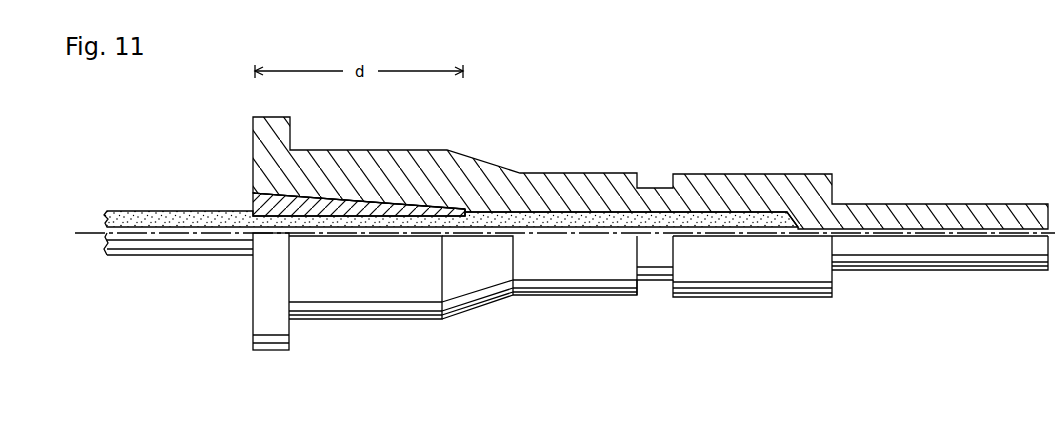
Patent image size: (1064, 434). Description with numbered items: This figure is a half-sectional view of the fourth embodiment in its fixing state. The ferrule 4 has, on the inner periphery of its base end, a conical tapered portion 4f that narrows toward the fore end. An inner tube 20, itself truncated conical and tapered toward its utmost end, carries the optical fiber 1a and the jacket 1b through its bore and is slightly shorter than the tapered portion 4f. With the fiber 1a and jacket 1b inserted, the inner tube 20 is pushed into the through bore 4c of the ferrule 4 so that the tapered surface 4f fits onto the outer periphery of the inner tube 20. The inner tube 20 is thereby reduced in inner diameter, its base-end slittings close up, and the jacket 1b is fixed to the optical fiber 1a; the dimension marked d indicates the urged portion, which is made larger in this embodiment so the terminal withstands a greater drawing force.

The optical fiber 1a is at (107, 232).
The jacket 1b is at (157, 211).
The inner tube 20 is at (253, 200).
The ferrule 4 is at (577, 171).
The tapered portion 4f is at (365, 202).
The through bore 4c is at (469, 207).